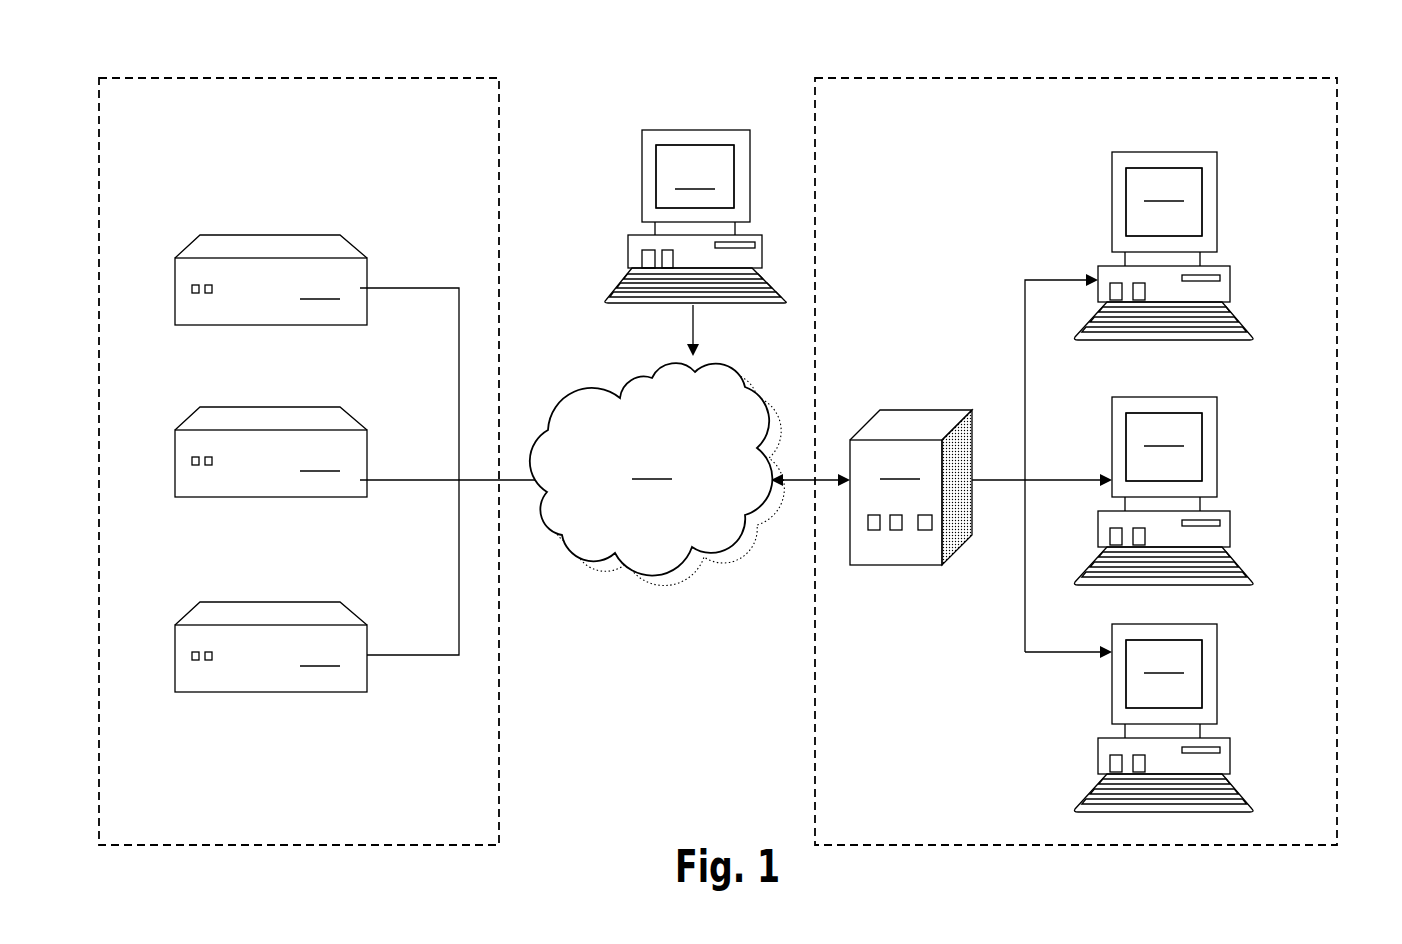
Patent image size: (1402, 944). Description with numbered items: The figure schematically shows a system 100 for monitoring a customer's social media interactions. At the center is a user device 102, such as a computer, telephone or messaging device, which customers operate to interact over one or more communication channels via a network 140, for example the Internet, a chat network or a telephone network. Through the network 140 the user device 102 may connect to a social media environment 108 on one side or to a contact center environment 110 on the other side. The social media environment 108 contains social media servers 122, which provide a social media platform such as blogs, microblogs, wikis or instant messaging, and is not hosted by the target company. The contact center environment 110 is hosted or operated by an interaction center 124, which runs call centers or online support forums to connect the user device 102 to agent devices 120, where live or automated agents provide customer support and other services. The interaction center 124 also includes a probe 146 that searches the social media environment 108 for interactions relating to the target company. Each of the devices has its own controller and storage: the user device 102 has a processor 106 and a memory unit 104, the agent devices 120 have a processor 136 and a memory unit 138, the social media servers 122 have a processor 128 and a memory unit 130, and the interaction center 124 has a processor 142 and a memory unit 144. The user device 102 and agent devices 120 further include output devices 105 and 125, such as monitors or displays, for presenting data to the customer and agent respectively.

The system 100 is at (598, 70).
The user device 102 is at (695, 216).
The memory unit 104 is at (655, 250).
The output device 105 is at (738, 162).
The processor 106 is at (640, 259).
The social media environment 108 is at (503, 137).
The contact center environment 110 is at (1340, 153).
The agent device 120 is at (1163, 482).
The social media server 122 is at (271, 463).
The interaction center 124 is at (911, 487).
The output device 125 is at (1198, 192).
The processor 128 is at (192, 279).
The memory unit 130 is at (204, 296).
The processor 136 is at (1110, 291).
The memory unit 138 is at (1140, 278).
The network 140 is at (657, 474).
The processor 142 is at (868, 527).
The memory unit 144 is at (893, 530).
The probe 146 is at (937, 532).